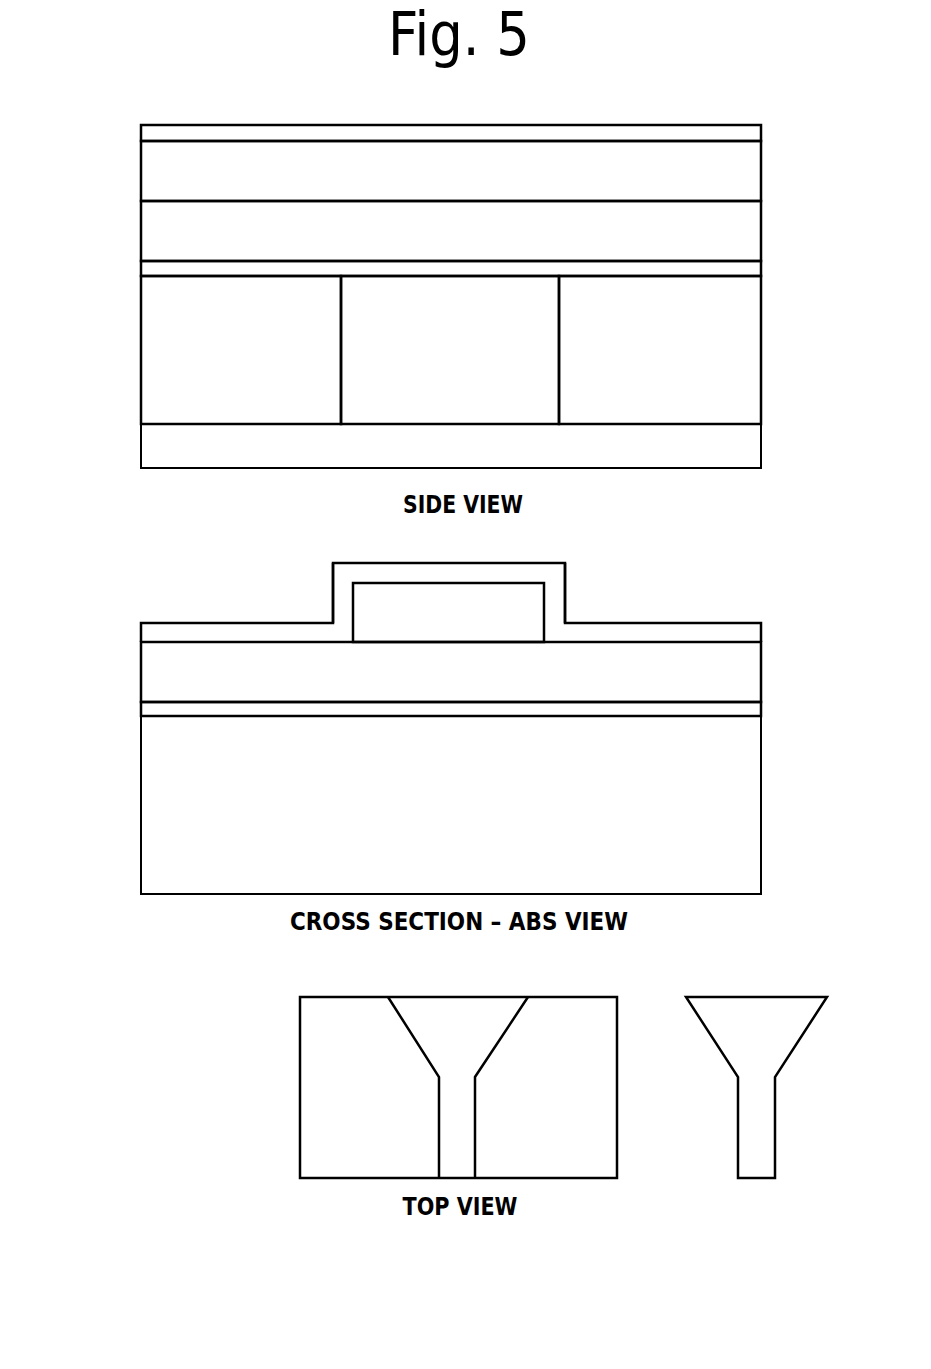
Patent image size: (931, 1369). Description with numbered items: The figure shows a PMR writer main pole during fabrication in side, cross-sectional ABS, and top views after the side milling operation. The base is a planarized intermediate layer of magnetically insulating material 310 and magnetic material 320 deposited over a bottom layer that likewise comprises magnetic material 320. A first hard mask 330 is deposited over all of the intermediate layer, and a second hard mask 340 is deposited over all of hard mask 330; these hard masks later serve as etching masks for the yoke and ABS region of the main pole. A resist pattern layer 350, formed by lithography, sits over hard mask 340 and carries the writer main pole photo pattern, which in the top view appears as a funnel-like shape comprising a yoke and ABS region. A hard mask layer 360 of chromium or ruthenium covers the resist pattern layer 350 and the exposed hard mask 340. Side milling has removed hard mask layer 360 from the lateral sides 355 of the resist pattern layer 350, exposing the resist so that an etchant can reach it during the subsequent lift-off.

The magnetically insulating material 310 is at (222, 360).
The magnetic material 320 is at (432, 360).
The hard mask 330 is at (138, 268).
The second hard mask 340 is at (432, 242).
The resist pattern layer 350 is at (432, 182).
The lateral sides 355 is at (315, 598).
The hard mask layer 360 is at (138, 136).